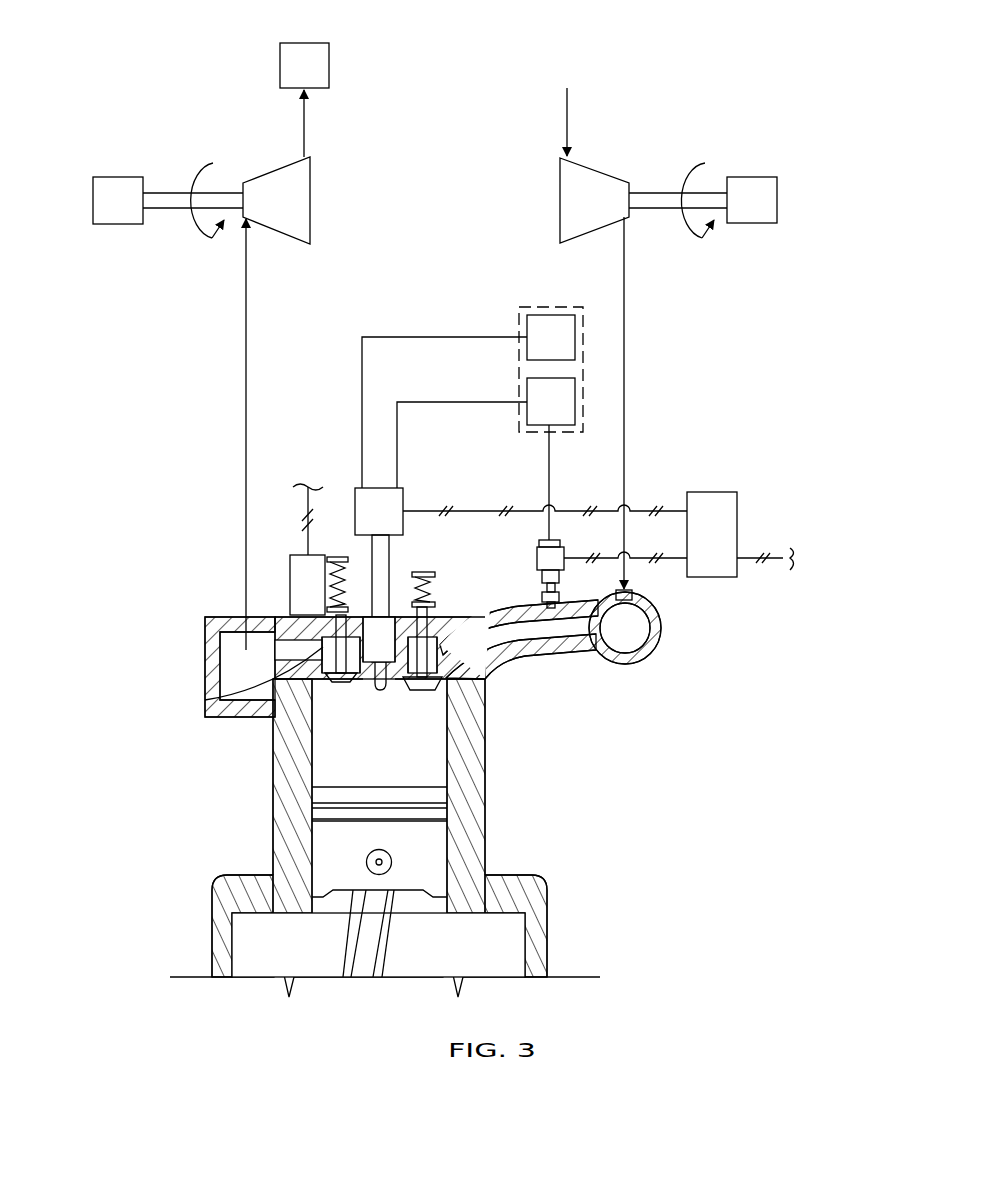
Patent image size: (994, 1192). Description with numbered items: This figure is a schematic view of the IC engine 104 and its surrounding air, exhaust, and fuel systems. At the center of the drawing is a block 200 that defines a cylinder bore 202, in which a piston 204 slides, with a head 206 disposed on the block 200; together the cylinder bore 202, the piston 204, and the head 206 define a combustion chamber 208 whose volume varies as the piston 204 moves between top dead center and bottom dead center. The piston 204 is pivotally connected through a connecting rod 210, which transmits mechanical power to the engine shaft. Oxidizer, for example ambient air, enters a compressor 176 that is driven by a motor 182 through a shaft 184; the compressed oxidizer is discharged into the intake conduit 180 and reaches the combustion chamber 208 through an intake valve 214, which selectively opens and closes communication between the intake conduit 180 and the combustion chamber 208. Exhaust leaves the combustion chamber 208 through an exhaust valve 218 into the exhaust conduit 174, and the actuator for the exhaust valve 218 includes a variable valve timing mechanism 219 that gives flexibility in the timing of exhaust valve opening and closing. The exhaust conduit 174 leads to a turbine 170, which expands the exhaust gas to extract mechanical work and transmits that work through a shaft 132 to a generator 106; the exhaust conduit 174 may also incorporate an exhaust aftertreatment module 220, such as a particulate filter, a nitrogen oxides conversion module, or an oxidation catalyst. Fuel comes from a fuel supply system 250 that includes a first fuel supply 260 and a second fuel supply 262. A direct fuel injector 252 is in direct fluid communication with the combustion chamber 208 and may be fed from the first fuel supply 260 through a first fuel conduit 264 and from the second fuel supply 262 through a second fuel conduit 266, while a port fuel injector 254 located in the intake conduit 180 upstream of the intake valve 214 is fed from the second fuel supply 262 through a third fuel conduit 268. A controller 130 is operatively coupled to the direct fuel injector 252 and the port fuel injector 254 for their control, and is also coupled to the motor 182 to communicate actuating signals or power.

The IC engine 104 is at (634, 45).
The generator 106 is at (130, 212).
The shaft 132 is at (165, 192).
The turbine 170 is at (289, 212).
The exhaust aftertreatment module 220 is at (316, 76).
The exhaust conduit 174 is at (245, 440).
The compressor 176 is at (606, 212).
The shaft 184 is at (653, 192).
The motor 182 is at (764, 212).
The intake conduit 180 is at (627, 270).
The fuel supply system 250 is at (590, 355).
The first fuel supply 260 is at (563, 350).
The second fuel supply 262 is at (563, 413).
The first fuel conduit 264 is at (362, 375).
The second fuel conduit 266 is at (454, 400).
The third fuel conduit 268 is at (548, 468).
The direct fuel injector 252 is at (391, 523).
The controller 130 is at (724, 543).
The port fuel injector 254 is at (535, 556).
The variable valve timing mechanism 219 is at (290, 590).
The head 206 is at (485, 668).
The exhaust valve 218 is at (205, 702).
The intake valve 214 is at (452, 630).
The block 200 is at (273, 830).
The combustion chamber 208 is at (392, 733).
The cylinder bore 202 is at (312, 765).
The piston 204 is at (432, 853).
The connecting rod 210 is at (390, 937).